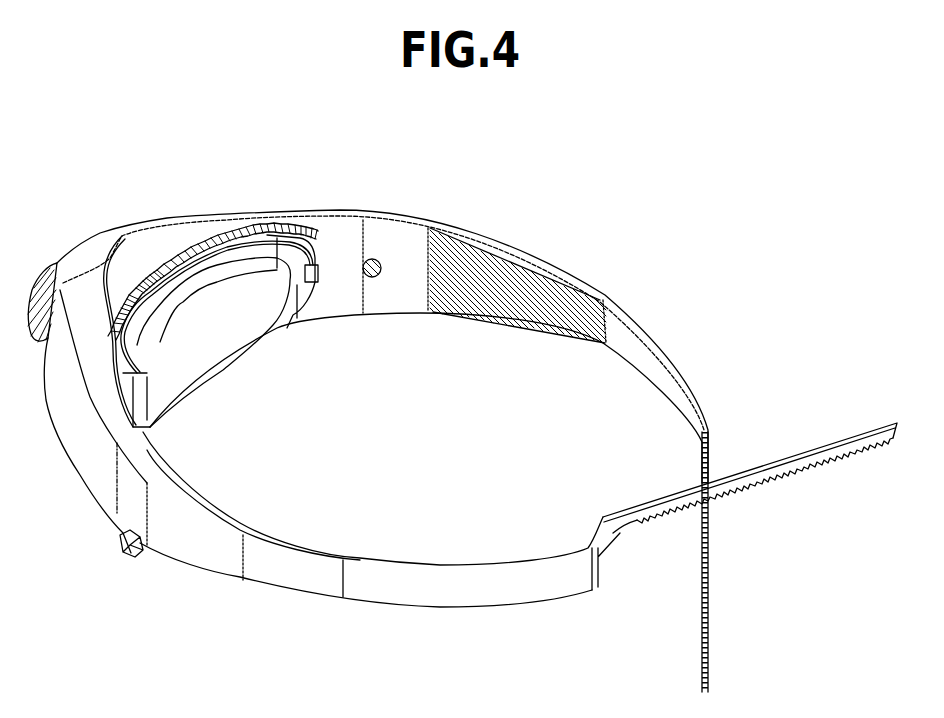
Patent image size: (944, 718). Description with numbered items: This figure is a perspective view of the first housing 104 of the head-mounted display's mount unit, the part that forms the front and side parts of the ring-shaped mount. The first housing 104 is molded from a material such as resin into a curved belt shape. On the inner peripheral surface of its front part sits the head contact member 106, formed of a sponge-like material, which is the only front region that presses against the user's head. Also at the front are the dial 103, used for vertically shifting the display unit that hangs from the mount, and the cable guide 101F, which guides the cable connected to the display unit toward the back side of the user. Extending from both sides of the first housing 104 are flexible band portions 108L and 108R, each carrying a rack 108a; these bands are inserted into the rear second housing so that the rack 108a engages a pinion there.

The dial 103 is at (52, 264).
The first housing 104 is at (318, 210).
The head contact member 106 is at (234, 305).
The cable guide 101F is at (123, 547).
The band portion 108L is at (793, 455).
The band portion 108R is at (708, 597).
The rack 108a is at (800, 478).